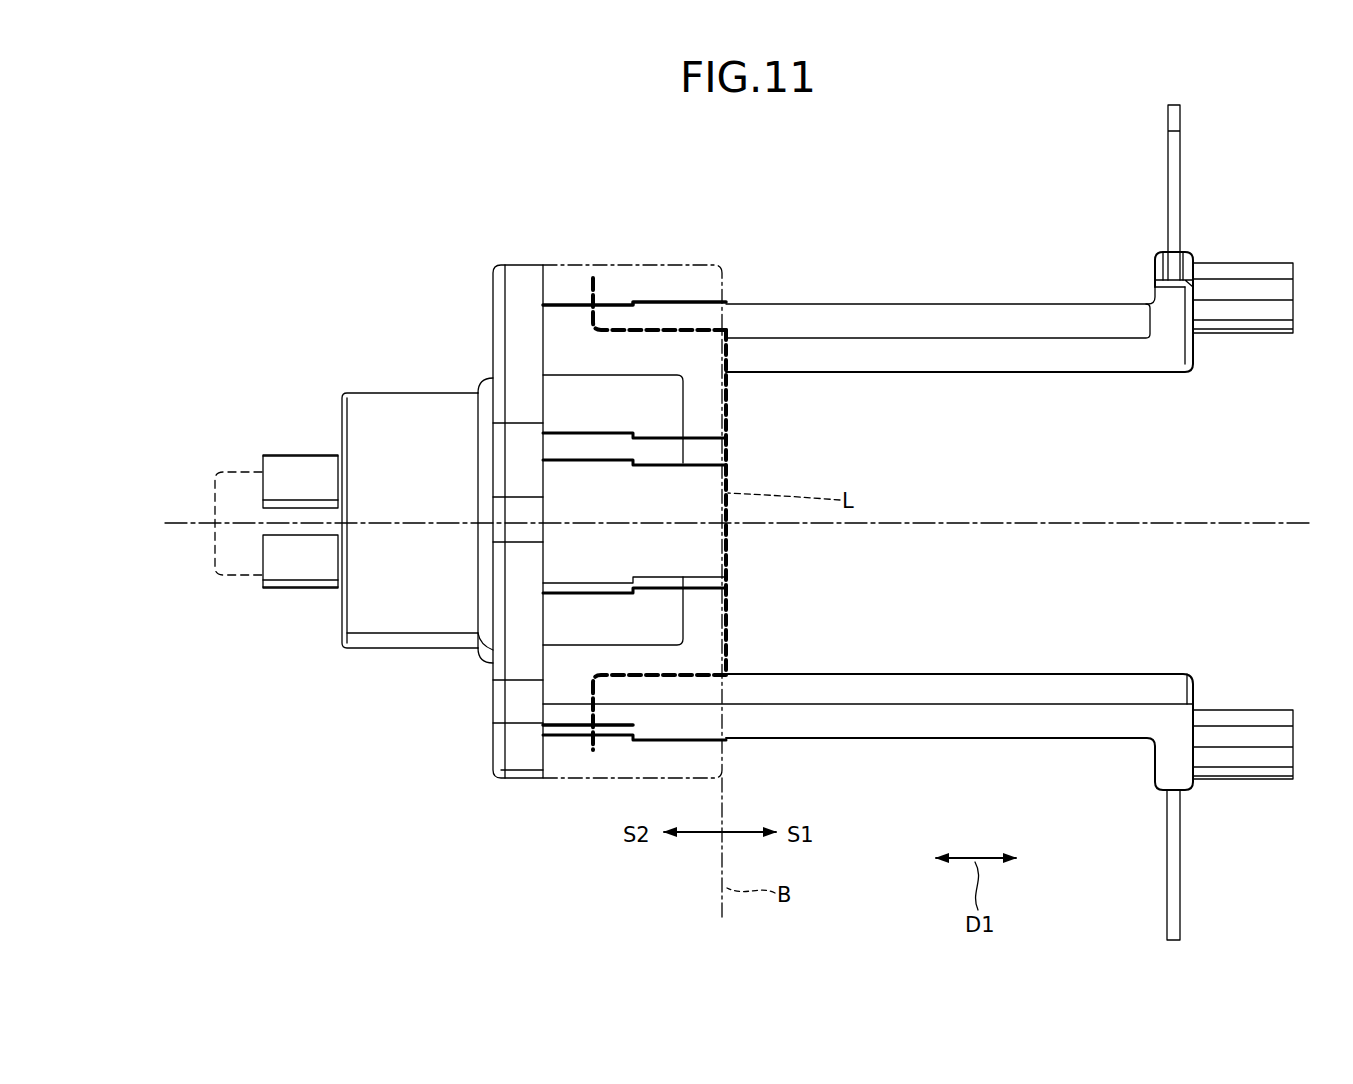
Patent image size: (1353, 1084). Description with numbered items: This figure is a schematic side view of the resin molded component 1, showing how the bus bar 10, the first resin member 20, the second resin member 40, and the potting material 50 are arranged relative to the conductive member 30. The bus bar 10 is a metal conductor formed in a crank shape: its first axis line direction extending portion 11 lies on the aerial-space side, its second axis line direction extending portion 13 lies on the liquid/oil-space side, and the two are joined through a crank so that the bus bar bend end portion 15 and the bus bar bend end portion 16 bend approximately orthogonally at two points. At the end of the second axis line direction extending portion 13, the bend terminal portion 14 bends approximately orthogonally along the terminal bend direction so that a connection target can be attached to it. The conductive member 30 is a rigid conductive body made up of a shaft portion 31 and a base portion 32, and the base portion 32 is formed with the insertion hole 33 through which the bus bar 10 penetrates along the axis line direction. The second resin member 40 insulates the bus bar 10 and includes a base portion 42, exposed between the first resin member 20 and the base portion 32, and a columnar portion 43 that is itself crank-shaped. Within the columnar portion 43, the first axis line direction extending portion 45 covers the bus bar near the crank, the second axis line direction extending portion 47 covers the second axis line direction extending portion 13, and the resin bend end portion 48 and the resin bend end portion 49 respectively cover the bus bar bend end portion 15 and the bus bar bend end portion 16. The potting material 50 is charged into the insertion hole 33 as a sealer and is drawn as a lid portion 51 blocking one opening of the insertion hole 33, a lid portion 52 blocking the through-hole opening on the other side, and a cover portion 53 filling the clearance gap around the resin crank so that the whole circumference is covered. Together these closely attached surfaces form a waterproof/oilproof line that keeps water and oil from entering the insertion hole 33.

The resin molded component 1 is at (270, 234).
The bus bar 10 is at (281, 436).
The first axis line direction extending portion 11 is at (318, 463).
The second axis line direction extending portion 13 is at (868, 512).
The bend terminal portion 14 is at (1182, 188).
The bus bar bend end portion 15 is at (707, 530).
The bus bar bend end portion 16 is at (607, 544).
The first resin member 20 is at (413, 370).
The conductive member 30 is at (641, 254).
The shaft portion 31 is at (245, 540).
The base portion 32 is at (655, 278).
The insertion hole 33 is at (734, 426).
The second resin member 40 is at (986, 282).
The base portion 42 is at (528, 290).
The columnar portion 43 is at (1071, 286).
The first axis line direction extending portion 45 is at (563, 412).
The second axis line direction extending portion 47 is at (806, 318).
The resin bend end portion 48 is at (659, 481).
The resin bend end portion 49 is at (580, 863).
The potting material 50 is at (734, 409).
The lid portion 51 is at (705, 382).
The lid portion 52 is at (560, 345).
The cover portion 53 is at (645, 357).